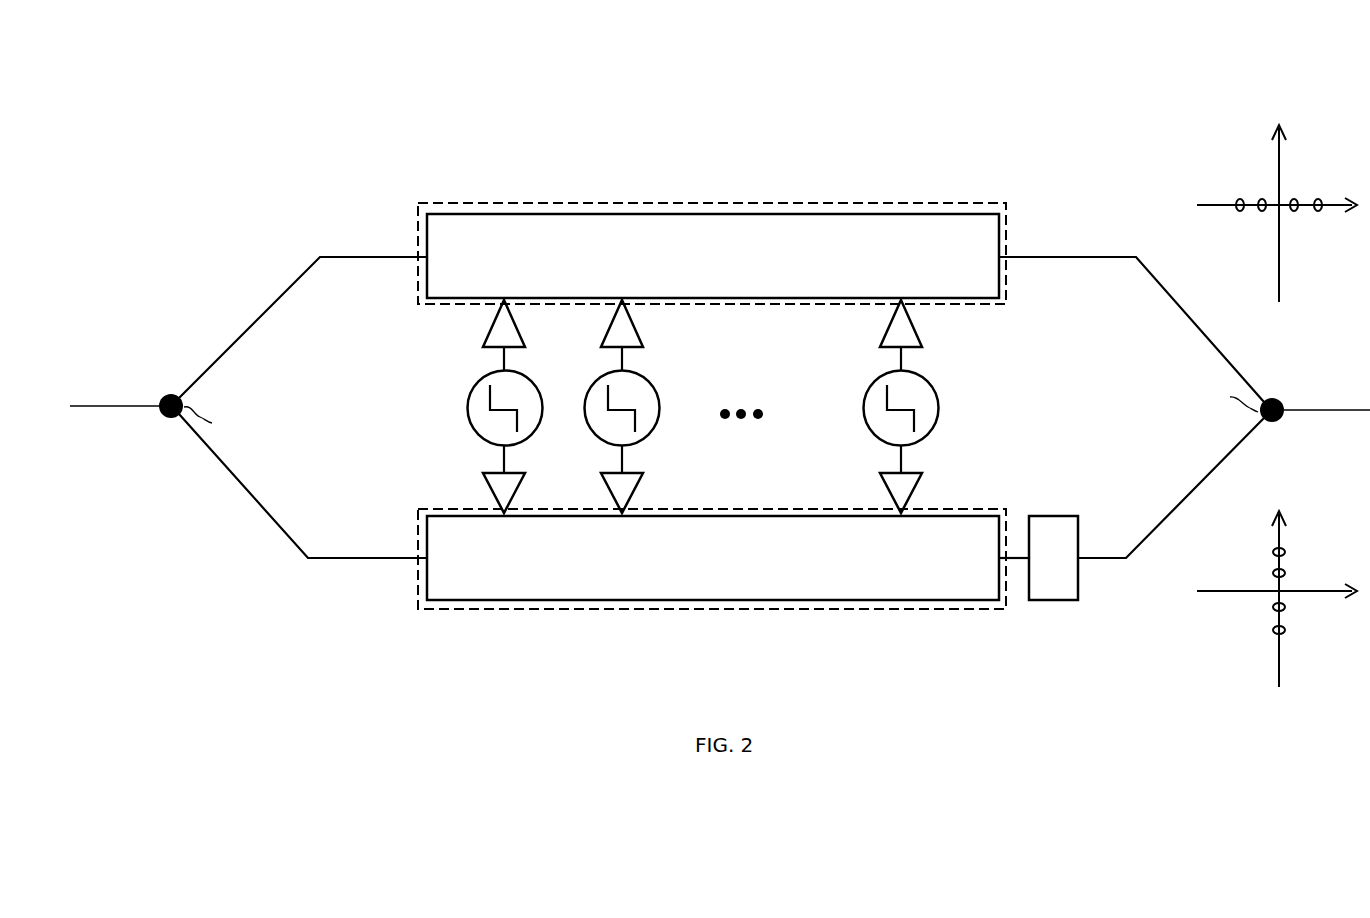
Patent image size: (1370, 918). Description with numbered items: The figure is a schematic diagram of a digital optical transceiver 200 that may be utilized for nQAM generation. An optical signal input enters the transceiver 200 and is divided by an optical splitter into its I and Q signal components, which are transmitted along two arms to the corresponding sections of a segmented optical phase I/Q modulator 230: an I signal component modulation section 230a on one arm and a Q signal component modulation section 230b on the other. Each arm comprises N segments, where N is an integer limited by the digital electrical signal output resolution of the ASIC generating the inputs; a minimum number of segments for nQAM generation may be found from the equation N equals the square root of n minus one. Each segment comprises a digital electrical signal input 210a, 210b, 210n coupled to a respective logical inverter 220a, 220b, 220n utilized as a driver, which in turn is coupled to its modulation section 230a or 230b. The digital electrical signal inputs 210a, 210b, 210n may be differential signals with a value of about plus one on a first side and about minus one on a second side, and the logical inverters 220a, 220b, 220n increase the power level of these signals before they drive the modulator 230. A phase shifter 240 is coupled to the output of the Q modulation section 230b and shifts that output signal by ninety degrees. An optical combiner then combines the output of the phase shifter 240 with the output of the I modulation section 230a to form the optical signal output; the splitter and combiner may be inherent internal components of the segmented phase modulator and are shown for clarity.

The digital optical transceiver 200 is at (168, 117).
The digital electrical signal input 210a is at (469, 428).
The digital electrical signal input 210b is at (587, 428).
The digital electrical signal input 210n is at (866, 428).
The logical inverter 220a is at (494, 315).
The logical inverter 220b is at (614, 315).
The logical inverter 220n is at (890, 315).
The segmented optical phase I/Q modulator 230 is at (1008, 227).
The I signal component modulation section 230a is at (709, 214).
The Q signal component modulation section 230b is at (708, 609).
The phase shifter 240 is at (1053, 602).